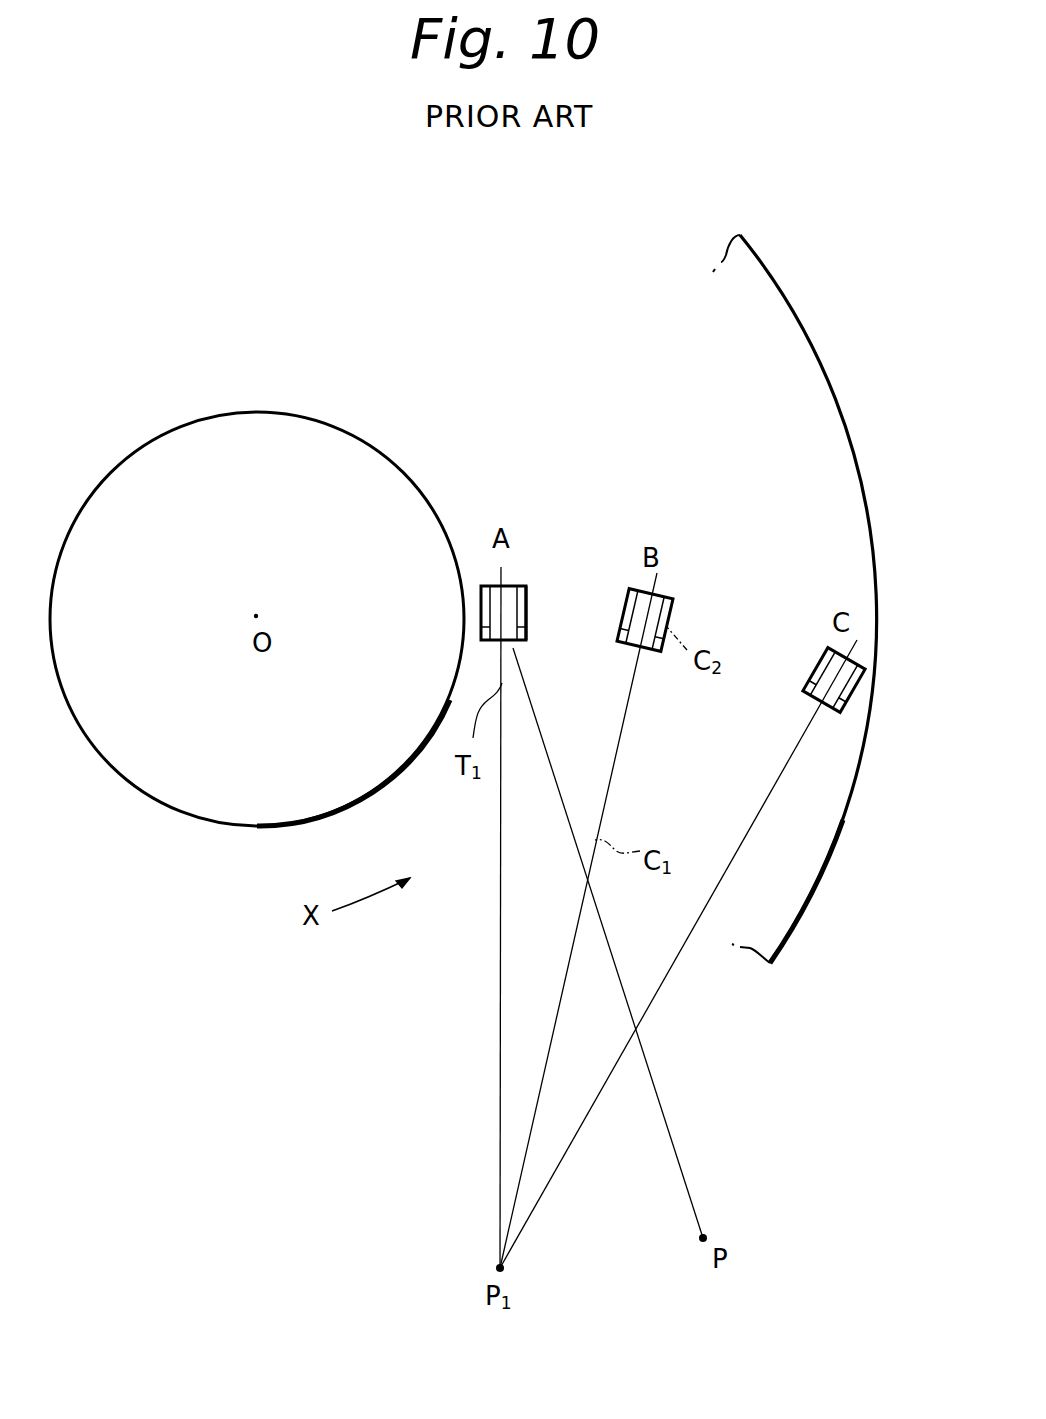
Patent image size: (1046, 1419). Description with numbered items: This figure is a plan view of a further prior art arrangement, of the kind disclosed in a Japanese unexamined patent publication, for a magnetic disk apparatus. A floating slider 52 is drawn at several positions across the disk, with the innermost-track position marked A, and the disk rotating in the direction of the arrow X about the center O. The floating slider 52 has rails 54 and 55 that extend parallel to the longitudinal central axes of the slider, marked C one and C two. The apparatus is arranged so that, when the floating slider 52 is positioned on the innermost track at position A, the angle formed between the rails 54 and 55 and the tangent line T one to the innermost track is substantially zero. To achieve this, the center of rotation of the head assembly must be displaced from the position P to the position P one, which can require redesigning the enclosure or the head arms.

The floating slider 52 is at (510, 594).
The rail 54 is at (527, 603).
The rail 55 is at (482, 597).